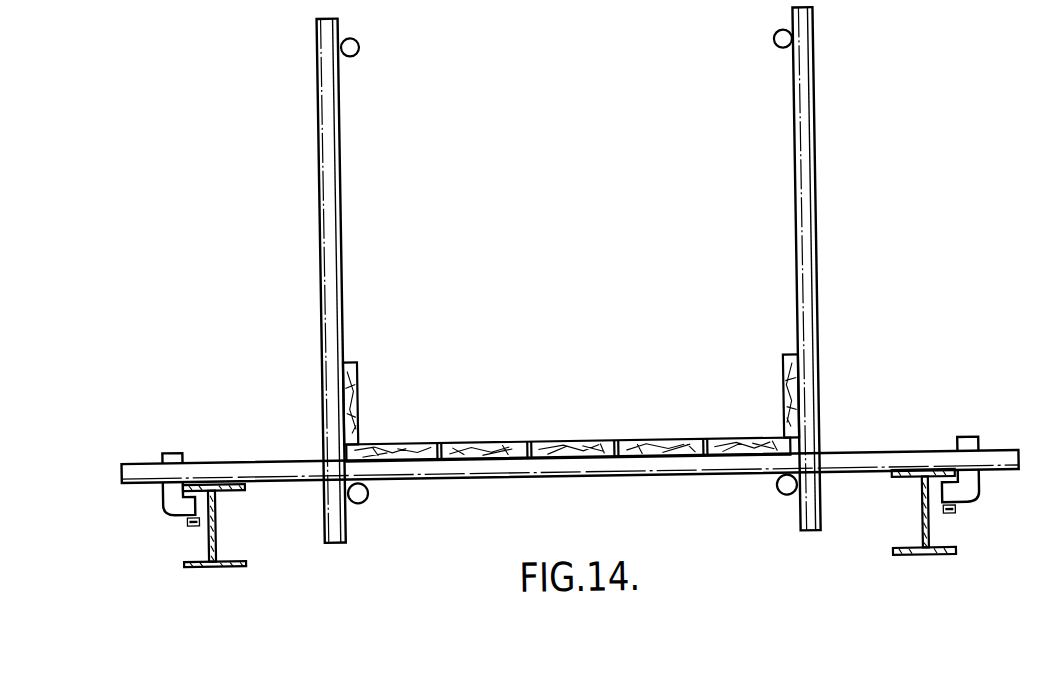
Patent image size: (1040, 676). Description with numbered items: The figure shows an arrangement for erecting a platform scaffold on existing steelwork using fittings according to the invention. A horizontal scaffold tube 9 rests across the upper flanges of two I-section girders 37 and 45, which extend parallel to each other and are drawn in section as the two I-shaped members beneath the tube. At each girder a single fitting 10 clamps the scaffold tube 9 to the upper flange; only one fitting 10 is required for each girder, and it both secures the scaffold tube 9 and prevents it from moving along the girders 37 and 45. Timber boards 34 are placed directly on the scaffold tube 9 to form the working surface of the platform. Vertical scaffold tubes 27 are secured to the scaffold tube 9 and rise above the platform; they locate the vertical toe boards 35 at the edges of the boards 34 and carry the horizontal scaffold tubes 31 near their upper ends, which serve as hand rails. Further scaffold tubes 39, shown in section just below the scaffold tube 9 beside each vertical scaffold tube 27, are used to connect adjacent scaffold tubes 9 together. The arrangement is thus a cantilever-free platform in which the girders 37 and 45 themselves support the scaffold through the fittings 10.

The scaffold tube 9 is at (1000, 477).
The fitting 10 is at (164, 447).
The vertical scaffold tube 27 is at (342, 198).
The scaffold tube 31 is at (363, 46).
The timber board 34 is at (557, 440).
The toe board 35 is at (357, 380).
The I-section girder 37 is at (242, 560).
The scaffold tube 39 is at (363, 497).
The I-section girder 45 is at (889, 556).